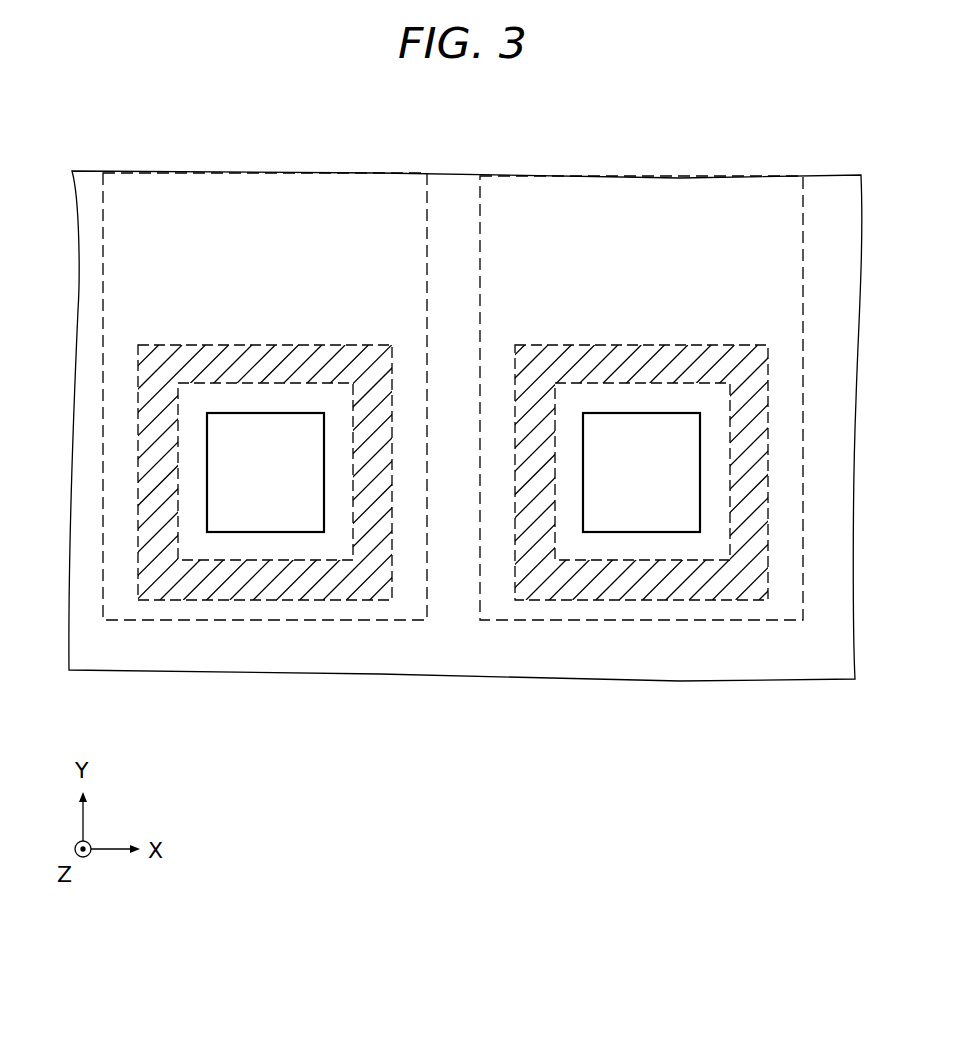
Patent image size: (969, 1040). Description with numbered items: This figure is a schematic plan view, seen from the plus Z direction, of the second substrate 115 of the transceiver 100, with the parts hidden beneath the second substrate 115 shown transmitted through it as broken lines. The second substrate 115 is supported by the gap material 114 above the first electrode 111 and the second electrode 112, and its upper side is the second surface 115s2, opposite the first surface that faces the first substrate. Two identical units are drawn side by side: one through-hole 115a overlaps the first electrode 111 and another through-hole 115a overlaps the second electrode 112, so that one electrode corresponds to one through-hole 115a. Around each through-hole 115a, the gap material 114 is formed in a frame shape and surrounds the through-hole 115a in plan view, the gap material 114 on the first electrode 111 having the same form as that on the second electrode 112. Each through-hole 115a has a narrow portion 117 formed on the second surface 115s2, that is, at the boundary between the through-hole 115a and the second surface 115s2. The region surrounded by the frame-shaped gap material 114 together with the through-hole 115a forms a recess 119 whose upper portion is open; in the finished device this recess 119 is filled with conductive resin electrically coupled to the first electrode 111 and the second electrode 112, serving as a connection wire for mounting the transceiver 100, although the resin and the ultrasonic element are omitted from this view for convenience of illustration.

The transceiver 100 is at (465, 376).
The first electrode 111 is at (588, 612).
The second electrode 112 is at (228, 612).
The gap material 114 is at (318, 593).
The second substrate 115 is at (453, 190).
The through-hole 115a is at (334, 493).
The second surface 115s2 is at (334, 257).
The narrow portion 117 is at (324, 432).
The recess 119 is at (236, 440).